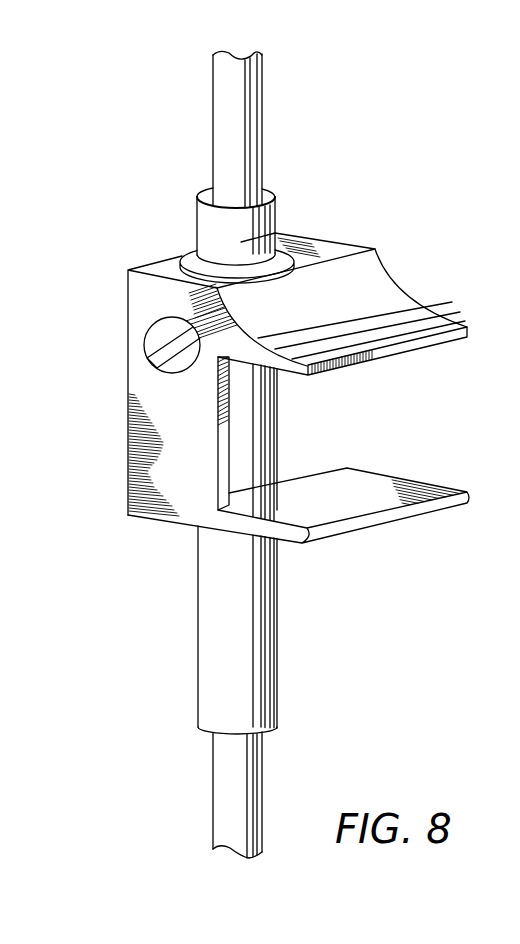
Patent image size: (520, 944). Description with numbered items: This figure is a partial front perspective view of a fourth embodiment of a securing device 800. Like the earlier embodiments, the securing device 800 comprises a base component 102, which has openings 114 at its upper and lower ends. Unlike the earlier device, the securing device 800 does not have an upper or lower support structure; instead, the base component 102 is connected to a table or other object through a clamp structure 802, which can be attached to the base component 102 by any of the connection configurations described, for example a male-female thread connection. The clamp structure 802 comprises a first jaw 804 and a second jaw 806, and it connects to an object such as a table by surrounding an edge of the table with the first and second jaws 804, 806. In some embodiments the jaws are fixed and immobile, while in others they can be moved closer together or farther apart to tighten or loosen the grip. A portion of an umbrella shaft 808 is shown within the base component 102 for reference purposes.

The securing device 800 is at (163, 217).
The clamp structure 802 is at (406, 290).
The first jaw 804 is at (393, 354).
The second jaw 806 is at (397, 478).
The umbrella shaft 808 is at (252, 108).
The opening 114 is at (266, 193).
The base component 102 is at (268, 628).